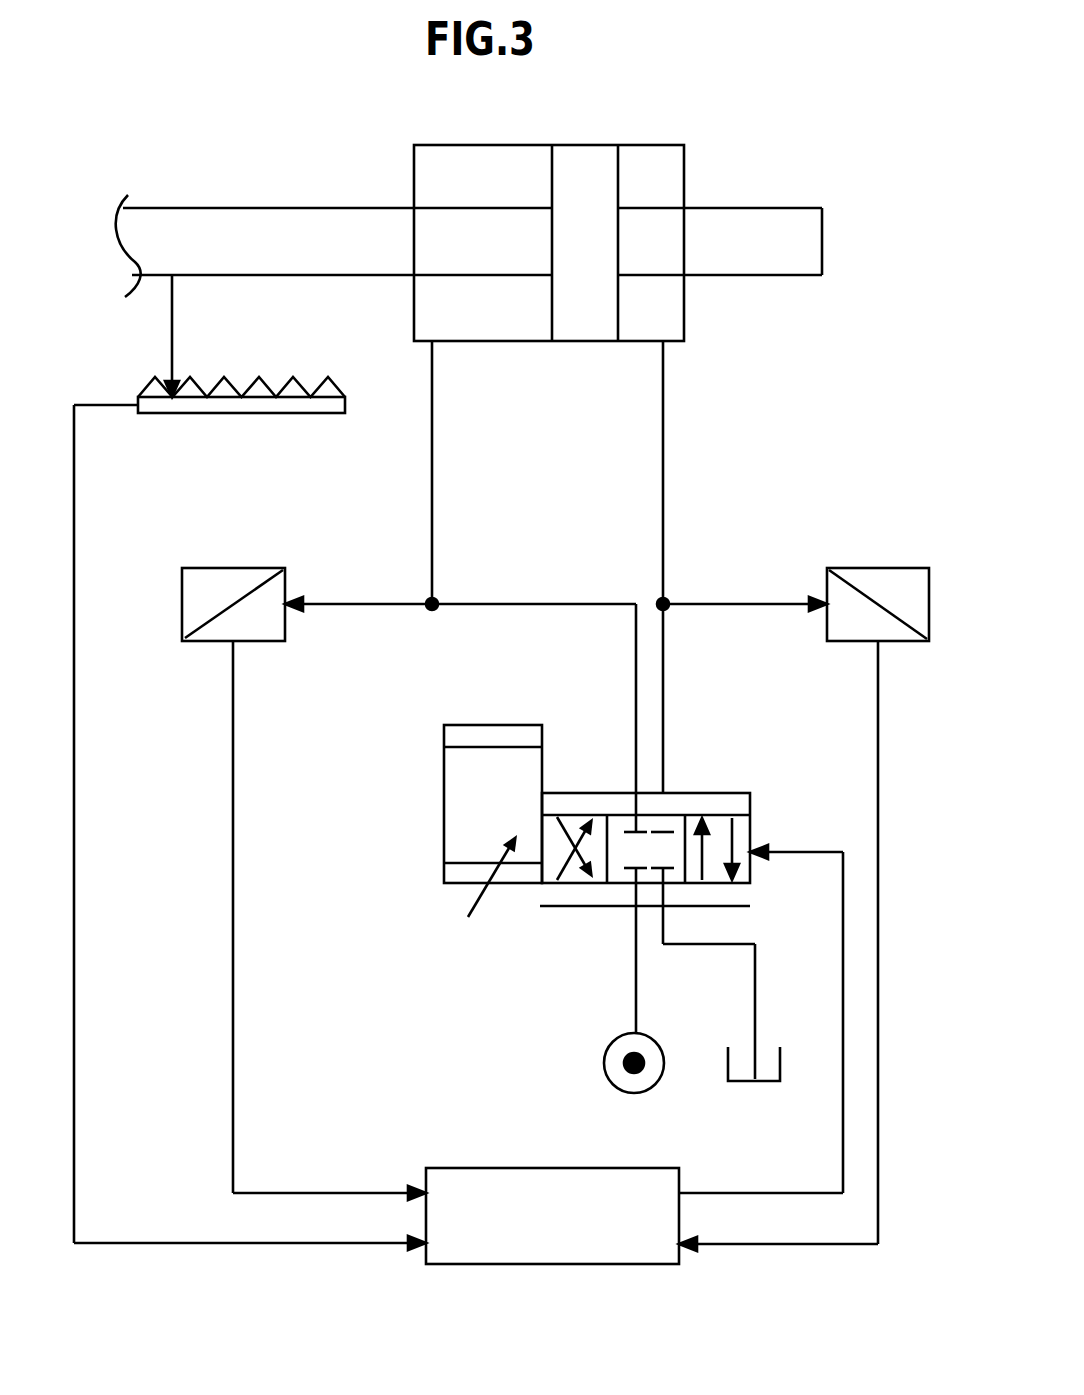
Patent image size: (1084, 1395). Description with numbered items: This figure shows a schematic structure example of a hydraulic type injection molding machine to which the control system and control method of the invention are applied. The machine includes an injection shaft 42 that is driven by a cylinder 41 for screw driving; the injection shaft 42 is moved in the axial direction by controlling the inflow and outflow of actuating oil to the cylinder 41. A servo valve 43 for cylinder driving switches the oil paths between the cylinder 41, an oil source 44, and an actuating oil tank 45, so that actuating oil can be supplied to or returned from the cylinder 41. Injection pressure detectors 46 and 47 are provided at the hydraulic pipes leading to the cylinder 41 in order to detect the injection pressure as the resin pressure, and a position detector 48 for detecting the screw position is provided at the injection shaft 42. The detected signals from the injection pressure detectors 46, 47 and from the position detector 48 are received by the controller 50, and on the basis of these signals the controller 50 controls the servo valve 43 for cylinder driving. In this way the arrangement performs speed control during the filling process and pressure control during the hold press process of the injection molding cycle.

The cylinder for screw driving 41 is at (648, 145).
The injection shaft 42 is at (250, 208).
The servo valve for cylinder driving 43 is at (710, 793).
The oil source 44 is at (604, 1063).
The actuating oil tank 45 is at (738, 1083).
The injection pressure detector 46 is at (909, 618).
The injection pressure detector 47 is at (205, 616).
The position detector 48 is at (170, 415).
The controller 50 is at (555, 1265).